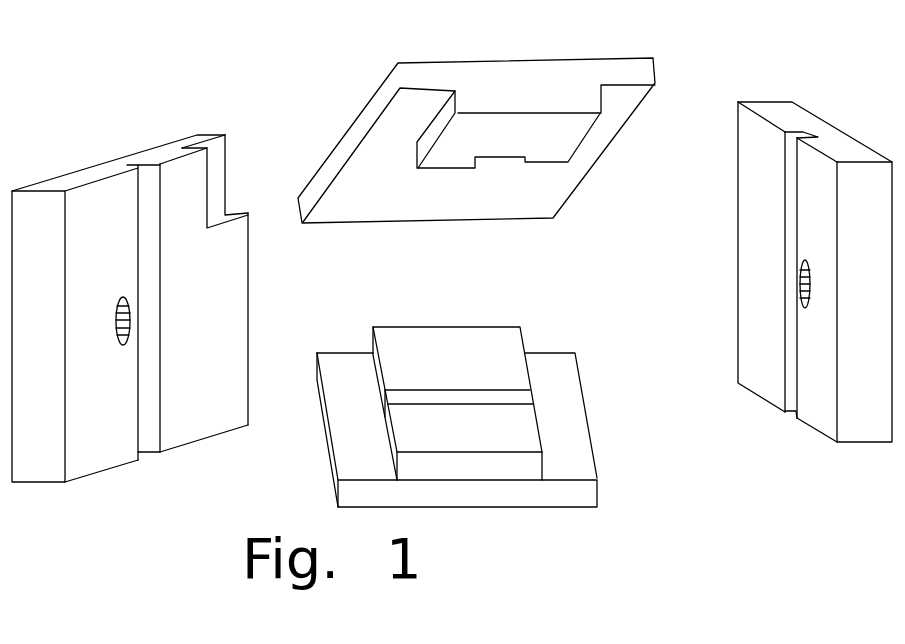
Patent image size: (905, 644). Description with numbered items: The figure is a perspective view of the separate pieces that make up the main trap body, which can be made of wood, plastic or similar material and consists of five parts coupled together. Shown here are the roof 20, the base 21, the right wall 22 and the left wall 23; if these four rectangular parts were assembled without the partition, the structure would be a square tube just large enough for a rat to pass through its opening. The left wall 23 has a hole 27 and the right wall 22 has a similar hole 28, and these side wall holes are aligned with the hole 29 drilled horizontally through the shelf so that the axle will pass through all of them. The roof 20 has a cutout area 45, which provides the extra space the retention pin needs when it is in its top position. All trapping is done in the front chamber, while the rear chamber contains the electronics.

The roof 20 is at (538, 84).
The base 21 is at (437, 422).
The right wall 22 is at (843, 252).
The left wall 23 is at (22, 283).
The hole in the left wall for the axle 27 is at (128, 342).
The hole in the right wall for the axle 28 is at (810, 300).
The hole in the shelf for the axle 29 is at (233, 217).
The cutout in the roof for the retention pin 45 is at (525, 161).